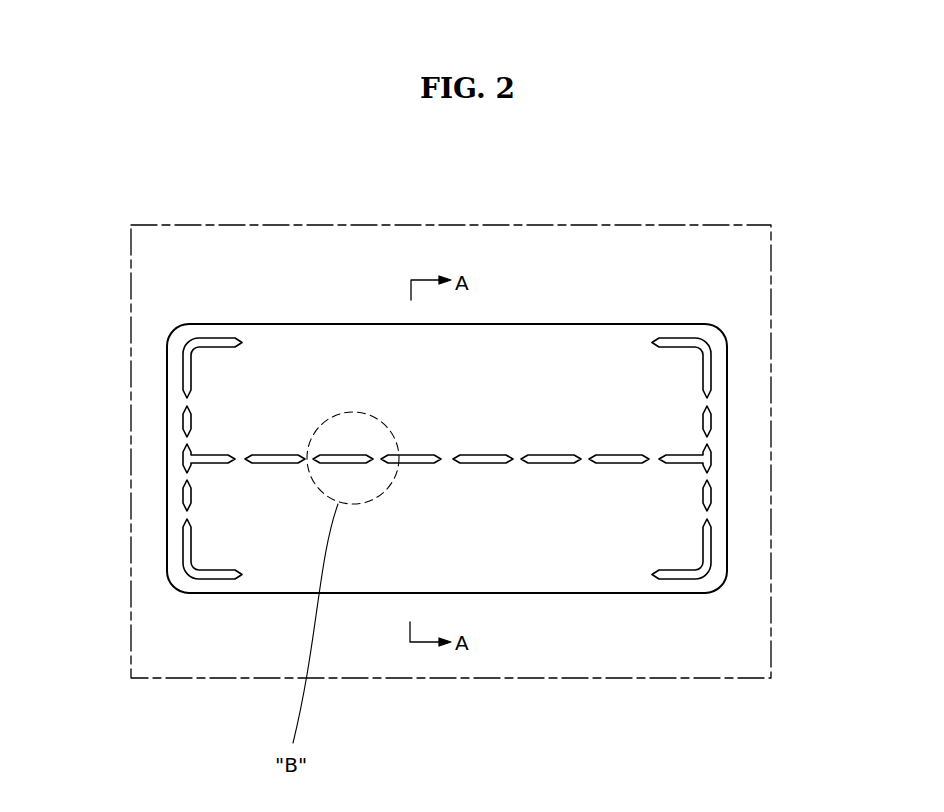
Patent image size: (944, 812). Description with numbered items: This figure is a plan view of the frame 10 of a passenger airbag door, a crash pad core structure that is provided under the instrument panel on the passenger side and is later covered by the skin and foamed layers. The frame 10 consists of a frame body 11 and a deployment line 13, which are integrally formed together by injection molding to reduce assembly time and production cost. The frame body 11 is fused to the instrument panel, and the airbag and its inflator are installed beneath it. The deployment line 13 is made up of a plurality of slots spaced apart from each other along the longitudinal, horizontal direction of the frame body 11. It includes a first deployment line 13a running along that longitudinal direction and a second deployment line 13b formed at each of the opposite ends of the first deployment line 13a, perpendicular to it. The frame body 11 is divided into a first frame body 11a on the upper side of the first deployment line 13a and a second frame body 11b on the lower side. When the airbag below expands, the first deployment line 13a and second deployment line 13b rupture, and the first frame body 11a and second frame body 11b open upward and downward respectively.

The frame 10 is at (600, 302).
The frame body 11 is at (56, 366).
The first frame body 11a is at (248, 387).
The second frame body 11b is at (243, 493).
The deployment line 13 is at (865, 402).
The first deployment line 13a is at (627, 460).
The second deployment line 13b is at (710, 420).